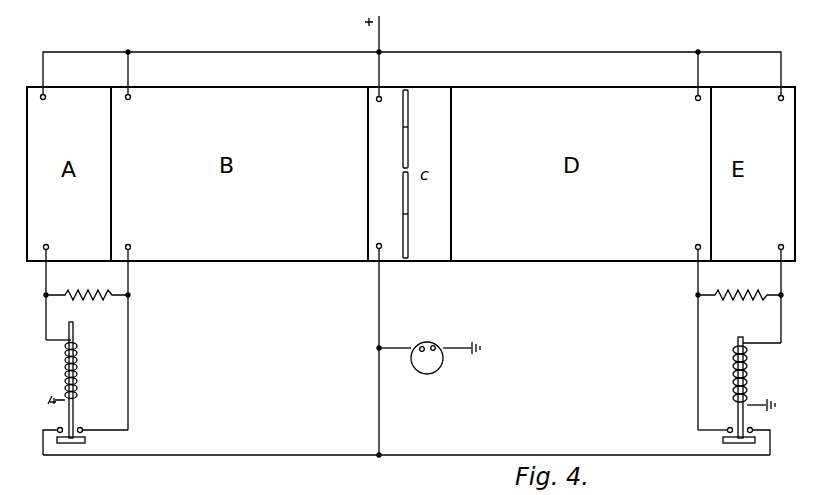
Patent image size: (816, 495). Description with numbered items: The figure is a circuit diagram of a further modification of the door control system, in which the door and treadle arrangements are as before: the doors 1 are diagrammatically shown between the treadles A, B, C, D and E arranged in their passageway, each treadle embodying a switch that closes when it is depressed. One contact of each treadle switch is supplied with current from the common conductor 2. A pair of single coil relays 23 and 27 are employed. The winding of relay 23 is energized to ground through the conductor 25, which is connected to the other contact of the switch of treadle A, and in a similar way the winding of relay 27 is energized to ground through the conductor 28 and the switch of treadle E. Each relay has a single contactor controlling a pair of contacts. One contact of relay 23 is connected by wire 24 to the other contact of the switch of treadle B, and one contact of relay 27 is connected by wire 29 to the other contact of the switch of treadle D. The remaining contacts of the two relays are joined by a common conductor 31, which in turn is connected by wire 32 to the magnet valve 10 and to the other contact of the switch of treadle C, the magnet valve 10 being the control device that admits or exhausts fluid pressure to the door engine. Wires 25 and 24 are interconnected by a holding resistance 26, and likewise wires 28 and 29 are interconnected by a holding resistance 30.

The door 1 is at (409, 142).
The common conductor 2 is at (381, 31).
The control device (magnet valve) 10 is at (429, 370).
The relay 23 is at (102, 375).
The wire 24 is at (130, 364).
The conductor 25 is at (43, 329).
The holding resistance 26 is at (95, 299).
The relay 27 is at (722, 387).
The conductor 28 is at (781, 327).
The wire 29 is at (697, 357).
The holding resistance 30 is at (733, 299).
The common conductor 31 is at (335, 453).
The wire 32 is at (381, 414).